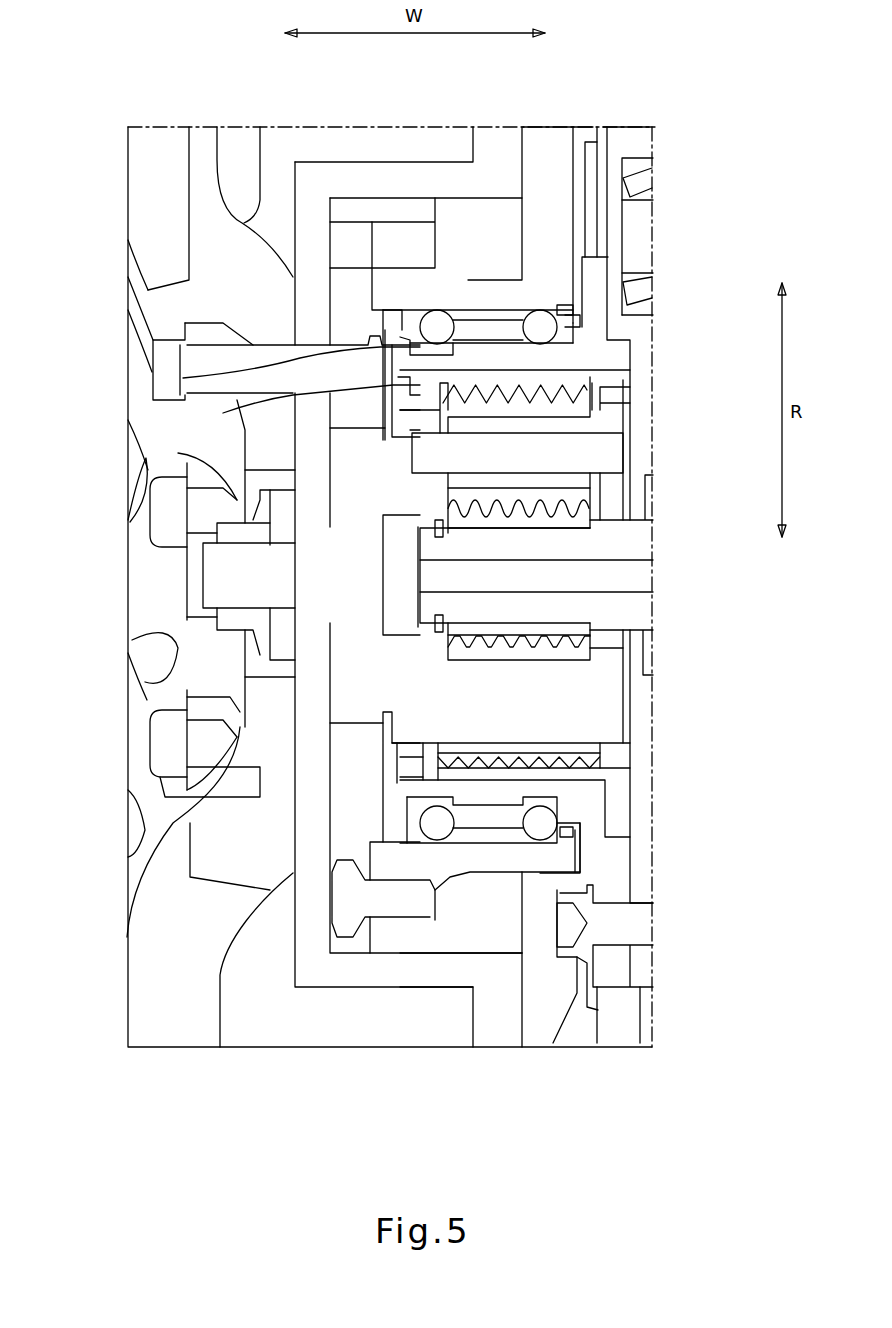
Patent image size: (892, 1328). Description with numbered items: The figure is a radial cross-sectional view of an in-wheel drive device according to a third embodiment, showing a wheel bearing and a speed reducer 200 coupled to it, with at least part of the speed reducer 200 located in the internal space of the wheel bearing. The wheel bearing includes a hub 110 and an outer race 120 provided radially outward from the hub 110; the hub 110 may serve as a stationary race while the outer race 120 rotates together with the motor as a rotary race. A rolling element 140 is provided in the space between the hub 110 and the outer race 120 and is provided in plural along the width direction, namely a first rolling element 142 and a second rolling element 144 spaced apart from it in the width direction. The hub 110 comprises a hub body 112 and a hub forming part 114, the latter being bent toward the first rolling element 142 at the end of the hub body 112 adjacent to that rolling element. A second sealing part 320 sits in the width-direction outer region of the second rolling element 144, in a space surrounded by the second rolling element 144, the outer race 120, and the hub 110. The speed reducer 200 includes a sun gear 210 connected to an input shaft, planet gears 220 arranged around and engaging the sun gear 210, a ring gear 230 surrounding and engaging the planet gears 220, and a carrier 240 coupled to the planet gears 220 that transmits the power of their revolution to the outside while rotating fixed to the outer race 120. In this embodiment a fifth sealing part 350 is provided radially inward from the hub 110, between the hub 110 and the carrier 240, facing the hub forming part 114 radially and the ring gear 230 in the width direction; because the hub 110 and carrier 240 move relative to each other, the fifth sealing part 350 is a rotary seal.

The hub 110 is at (622, 355).
The hub body 112 is at (560, 352).
The hub forming part 114 is at (185, 379).
The outer race 120 is at (485, 300).
The rolling element 140 is at (470, 608).
The first rolling element 142 is at (437, 325).
The second rolling element 144 is at (540, 325).
The speed reducer 200 is at (551, 784).
The sun gear 210 is at (573, 523).
The planet gears 220 is at (580, 490).
The ring gear 230 is at (580, 380).
The carrier 240 is at (578, 707).
The second sealing part 320 is at (620, 313).
The fifth sealing part 350 is at (223, 416).